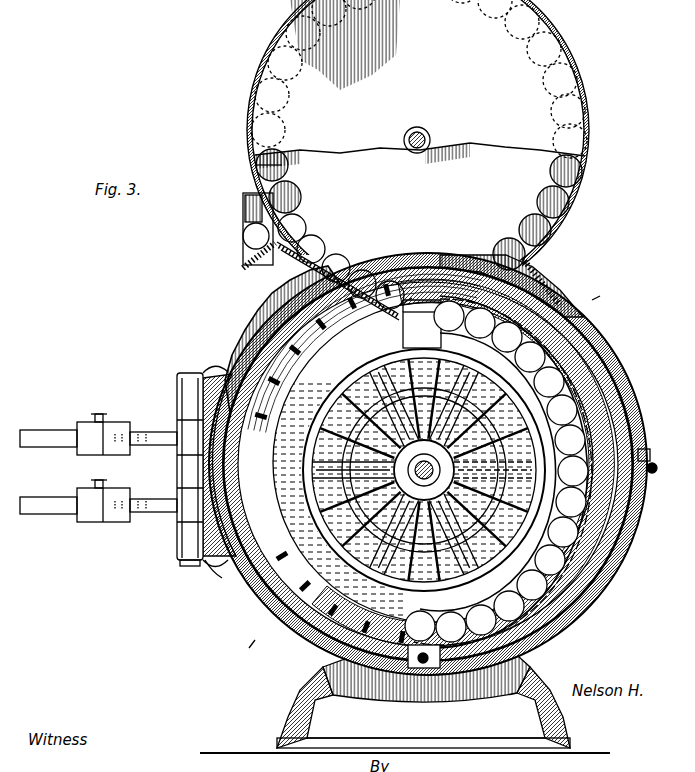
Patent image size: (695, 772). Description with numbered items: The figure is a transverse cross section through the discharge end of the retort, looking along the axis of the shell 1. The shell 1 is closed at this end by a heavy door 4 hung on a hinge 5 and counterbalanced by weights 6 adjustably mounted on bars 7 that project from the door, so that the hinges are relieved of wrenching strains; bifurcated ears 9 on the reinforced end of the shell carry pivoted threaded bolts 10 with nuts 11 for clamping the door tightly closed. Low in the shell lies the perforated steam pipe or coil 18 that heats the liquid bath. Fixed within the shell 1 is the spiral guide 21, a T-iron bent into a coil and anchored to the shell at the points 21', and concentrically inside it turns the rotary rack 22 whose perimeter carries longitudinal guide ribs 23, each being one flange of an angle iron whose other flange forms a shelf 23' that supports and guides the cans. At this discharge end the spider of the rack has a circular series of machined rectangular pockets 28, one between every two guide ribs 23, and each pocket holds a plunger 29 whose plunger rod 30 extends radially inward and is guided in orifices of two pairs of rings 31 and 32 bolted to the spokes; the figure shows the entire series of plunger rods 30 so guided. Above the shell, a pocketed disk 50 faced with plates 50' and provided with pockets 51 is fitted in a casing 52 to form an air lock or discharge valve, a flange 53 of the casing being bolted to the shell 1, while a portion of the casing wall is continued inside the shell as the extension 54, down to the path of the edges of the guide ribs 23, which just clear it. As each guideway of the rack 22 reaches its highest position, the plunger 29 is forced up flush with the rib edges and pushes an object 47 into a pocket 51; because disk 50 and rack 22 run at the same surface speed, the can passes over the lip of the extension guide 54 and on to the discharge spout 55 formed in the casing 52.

The shell 1 is at (625, 425).
The door 4 is at (226, 375).
The hinge 5 is at (177, 408).
The weights 6 is at (92, 456).
The bars 7 is at (58, 449).
The bifurcated ears 9 is at (647, 452).
The threaded bolts 10 is at (657, 468).
The nuts 11 is at (604, 298).
The pipe or coil 18 is at (428, 665).
The spiral guide 21 is at (445, 464).
The anchoring of the T-irons 21' is at (524, 459).
The rotary rack 22 is at (240, 590).
The guide ribs 23 is at (329, 443).
The shelf flange 23' is at (487, 463).
The guiding pockets 28 is at (424, 470).
The plungers 29 is at (422, 324).
The plunger rod 30 is at (215, 565).
The guide rings 31 is at (590, 537).
The guide rings 32 is at (600, 567).
The object 47 is at (243, 240).
The pocketed disk 50 is at (420, 135).
The plates 50' is at (419, 79).
The pockets 51 is at (583, 172).
The casing 52 is at (245, 125).
The flange 53 is at (550, 285).
The continuation of casing wall 54 is at (405, 290).
The discharge spout 55 is at (235, 271).